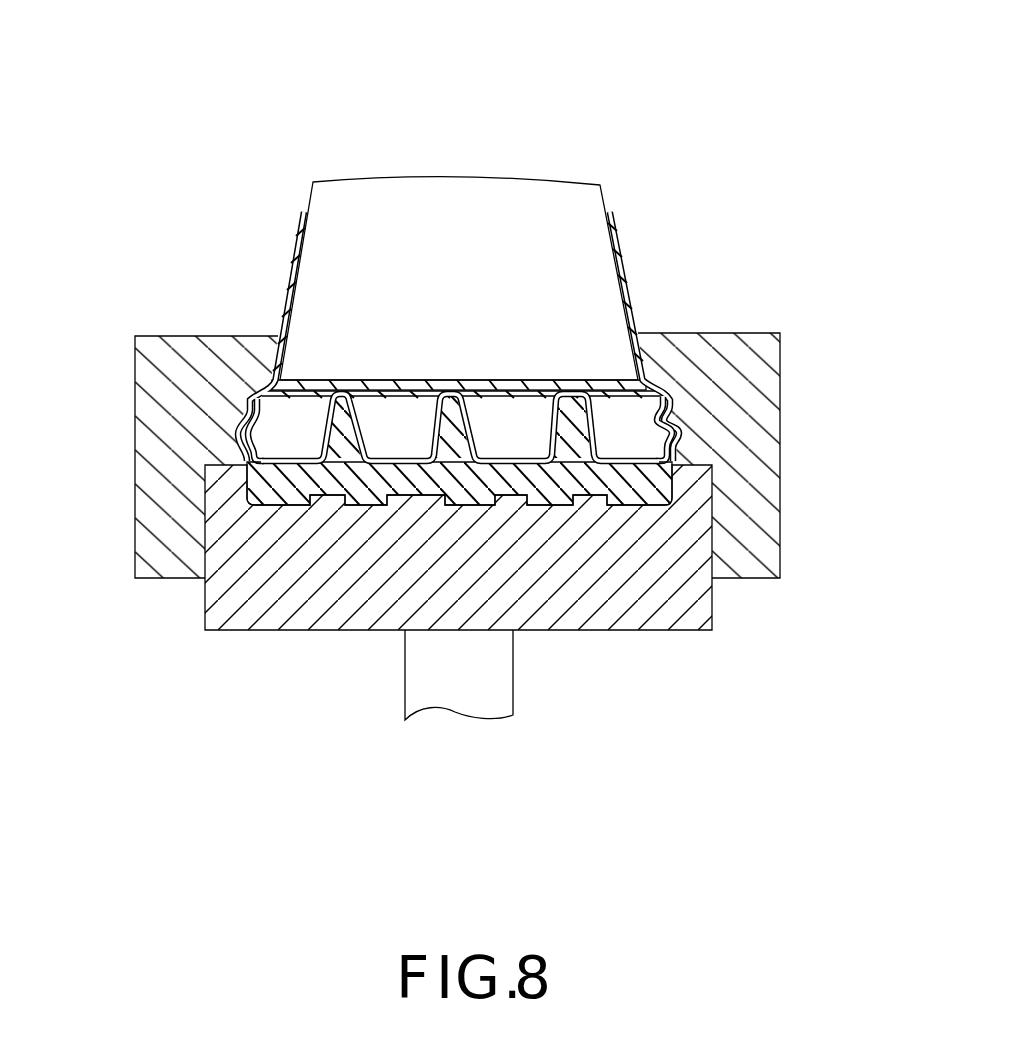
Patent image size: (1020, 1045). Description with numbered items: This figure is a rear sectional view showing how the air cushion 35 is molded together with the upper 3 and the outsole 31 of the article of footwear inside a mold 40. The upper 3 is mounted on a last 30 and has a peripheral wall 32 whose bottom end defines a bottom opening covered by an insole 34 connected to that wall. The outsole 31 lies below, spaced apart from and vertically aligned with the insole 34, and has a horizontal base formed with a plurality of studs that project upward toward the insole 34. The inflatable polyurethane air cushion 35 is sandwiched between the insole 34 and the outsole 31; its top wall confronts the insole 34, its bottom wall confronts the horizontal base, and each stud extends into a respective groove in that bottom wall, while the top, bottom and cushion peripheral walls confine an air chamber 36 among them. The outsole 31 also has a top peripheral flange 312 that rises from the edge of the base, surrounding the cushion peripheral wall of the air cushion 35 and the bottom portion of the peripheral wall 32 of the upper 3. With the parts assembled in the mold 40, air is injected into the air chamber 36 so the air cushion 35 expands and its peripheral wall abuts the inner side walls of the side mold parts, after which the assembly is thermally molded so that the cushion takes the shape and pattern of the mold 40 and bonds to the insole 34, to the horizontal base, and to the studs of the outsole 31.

The upper 3 is at (286, 261).
The last 30 is at (570, 164).
The outsole 31 is at (597, 507).
The peripheral wall 32 is at (622, 260).
The insole 34 is at (550, 380).
The air cushion 35 is at (479, 371).
The air chamber 36 is at (395, 440).
The mold 40 is at (792, 301).
The top peripheral flange 312 is at (250, 399).